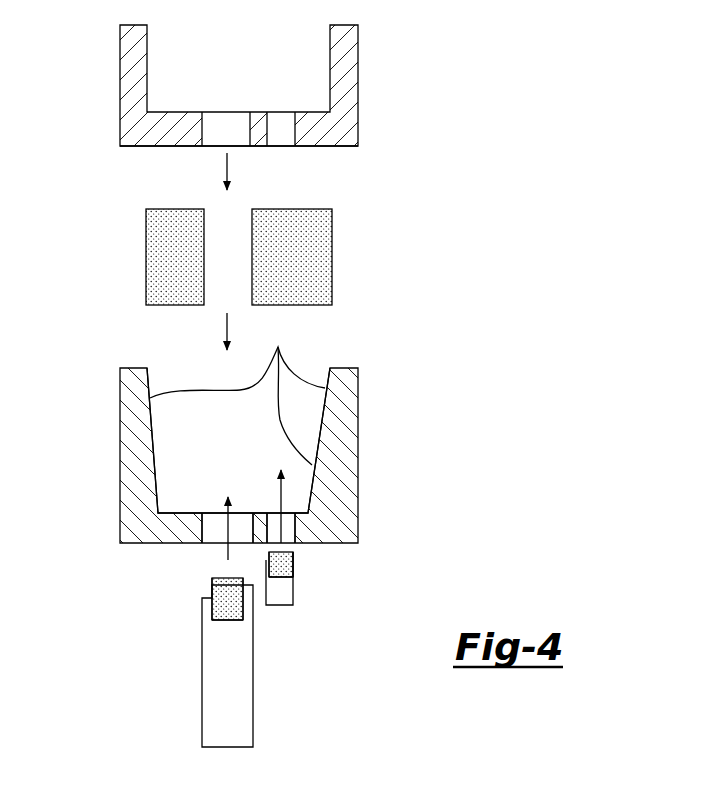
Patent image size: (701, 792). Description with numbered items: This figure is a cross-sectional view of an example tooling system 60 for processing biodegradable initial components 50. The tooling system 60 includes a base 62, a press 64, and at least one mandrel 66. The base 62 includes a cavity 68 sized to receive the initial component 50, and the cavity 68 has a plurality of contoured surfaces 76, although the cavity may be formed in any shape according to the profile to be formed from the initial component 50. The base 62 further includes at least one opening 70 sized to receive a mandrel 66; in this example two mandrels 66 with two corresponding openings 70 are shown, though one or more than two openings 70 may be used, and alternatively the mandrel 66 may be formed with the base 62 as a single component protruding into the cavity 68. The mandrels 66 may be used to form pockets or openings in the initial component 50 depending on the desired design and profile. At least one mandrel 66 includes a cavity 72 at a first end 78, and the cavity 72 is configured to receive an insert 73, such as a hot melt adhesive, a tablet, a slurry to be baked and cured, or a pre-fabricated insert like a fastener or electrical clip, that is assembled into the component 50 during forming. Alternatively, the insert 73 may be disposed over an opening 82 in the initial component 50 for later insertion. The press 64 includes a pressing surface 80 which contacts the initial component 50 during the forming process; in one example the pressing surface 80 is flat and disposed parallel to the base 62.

The biodegradable initial component 50 is at (157, 240).
The tooling system 60 is at (458, 185).
The base 62 is at (337, 490).
The press 64 is at (358, 62).
The mandrel 66 is at (236, 660).
The cavity 68 is at (178, 420).
The opening 70 is at (211, 522).
The cavity 72 is at (266, 548).
The insert 73 is at (227, 610).
The contoured surfaces 76 is at (237, 395).
The first end 78 is at (212, 599).
The pressing surface 80 is at (130, 147).
The opening 82 is at (253, 226).